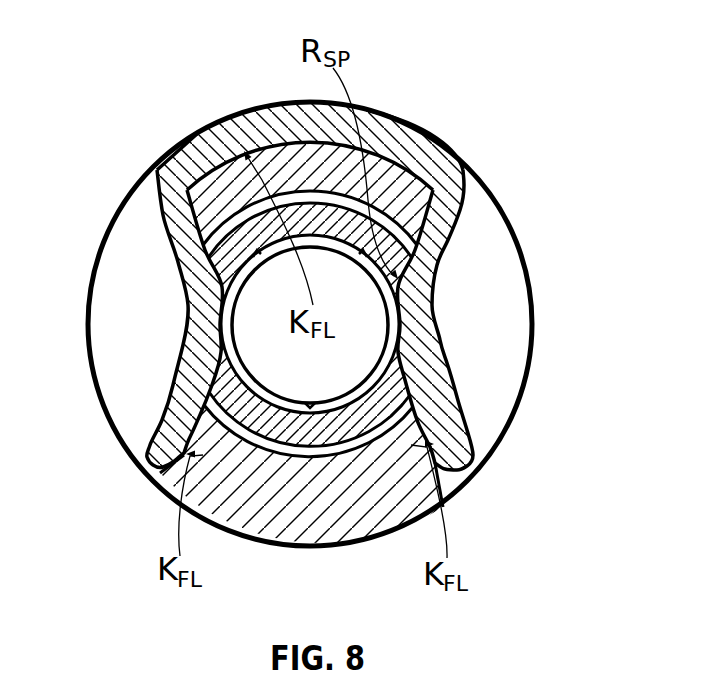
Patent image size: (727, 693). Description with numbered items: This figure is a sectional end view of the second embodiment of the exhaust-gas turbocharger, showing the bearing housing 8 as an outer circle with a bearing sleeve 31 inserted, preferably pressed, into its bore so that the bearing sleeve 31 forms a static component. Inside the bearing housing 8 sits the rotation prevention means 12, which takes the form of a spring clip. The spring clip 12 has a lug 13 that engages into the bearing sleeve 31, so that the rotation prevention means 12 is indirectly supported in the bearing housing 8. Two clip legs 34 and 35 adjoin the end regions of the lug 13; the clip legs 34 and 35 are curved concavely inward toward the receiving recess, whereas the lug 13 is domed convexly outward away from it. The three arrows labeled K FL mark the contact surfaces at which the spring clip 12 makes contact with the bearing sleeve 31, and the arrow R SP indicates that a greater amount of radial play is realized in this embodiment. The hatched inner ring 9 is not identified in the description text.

The bearing housing 8 is at (481, 178).
The inner ring / bearing sleeve 9 is at (334, 428).
The rotation prevention means 12 is at (307, 262).
The lug 13 is at (401, 136).
The bearing sleeve 31 is at (443, 484).
The clip leg 34 is at (188, 304).
The clip leg 35 is at (416, 317).